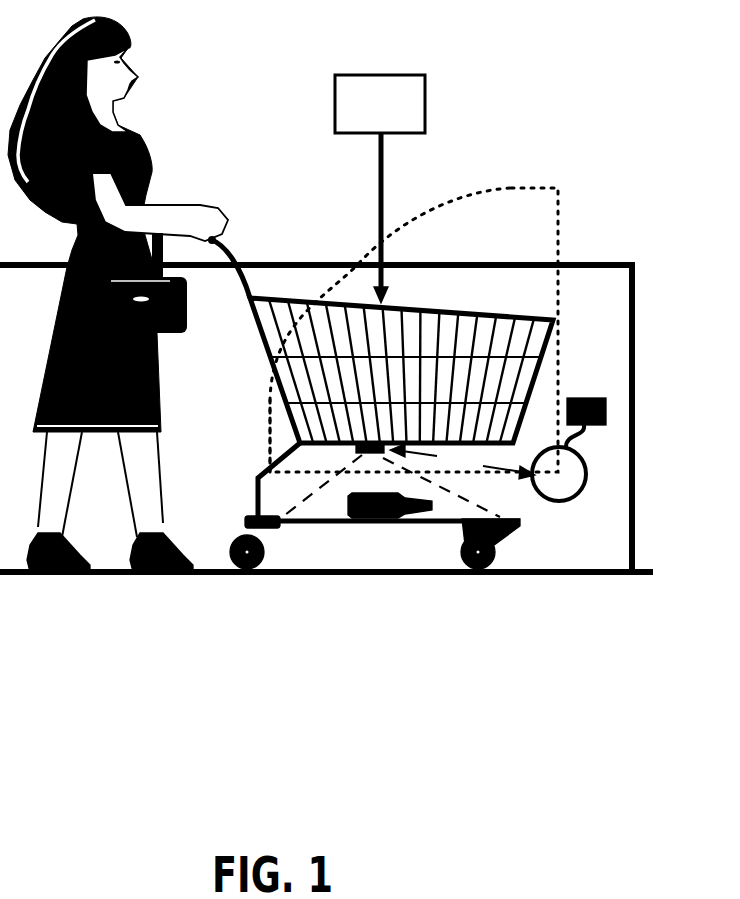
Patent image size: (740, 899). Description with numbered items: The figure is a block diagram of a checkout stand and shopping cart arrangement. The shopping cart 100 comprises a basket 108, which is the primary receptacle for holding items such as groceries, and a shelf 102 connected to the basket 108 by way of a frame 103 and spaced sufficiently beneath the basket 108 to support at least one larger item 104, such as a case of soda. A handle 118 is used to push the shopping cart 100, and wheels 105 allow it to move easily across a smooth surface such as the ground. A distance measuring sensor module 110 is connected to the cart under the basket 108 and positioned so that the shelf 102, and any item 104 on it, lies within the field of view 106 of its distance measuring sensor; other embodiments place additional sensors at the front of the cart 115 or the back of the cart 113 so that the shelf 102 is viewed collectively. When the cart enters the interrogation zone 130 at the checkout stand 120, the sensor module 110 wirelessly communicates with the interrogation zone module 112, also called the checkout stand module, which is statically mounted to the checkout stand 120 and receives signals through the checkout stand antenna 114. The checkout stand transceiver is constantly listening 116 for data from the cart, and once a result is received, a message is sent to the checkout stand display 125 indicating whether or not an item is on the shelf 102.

The shopping cart 100 is at (392, 391).
The shelf 102 is at (302, 524).
The frame 103 is at (252, 495).
The item 104 is at (365, 493).
The wheels 105 is at (483, 573).
The field of view 106 is at (310, 489).
The basket 108 is at (542, 366).
The distance measuring sensor module 110 is at (369, 443).
The interrogation zone module 112 is at (563, 415).
The back of the cart 113 is at (271, 436).
The checkout stand antenna 114 is at (585, 485).
The front of the cart 115 is at (553, 438).
The listening 116 is at (462, 461).
The handle 118 is at (240, 252).
The checkout stand 120 is at (582, 263).
The checkout stand display 125 is at (428, 113).
The interrogation zone 130 is at (511, 188).